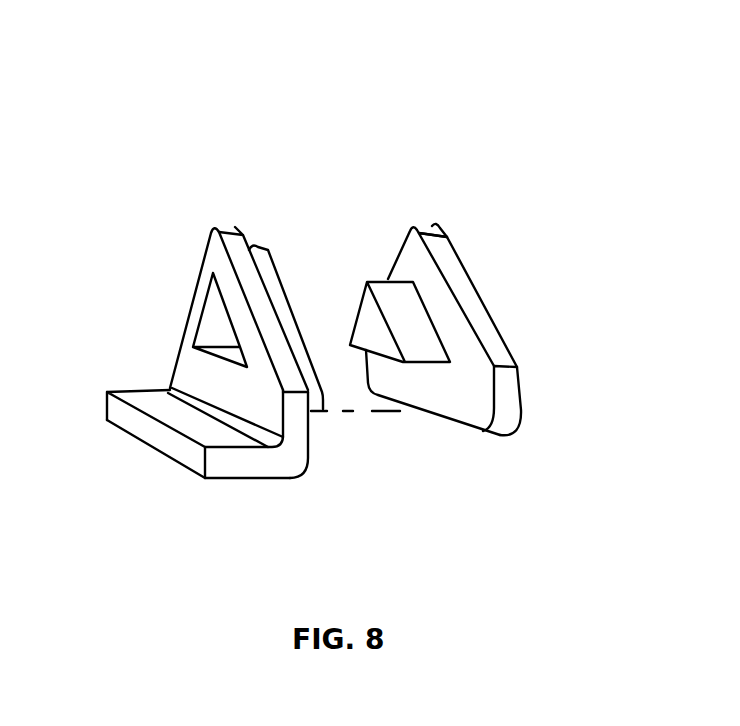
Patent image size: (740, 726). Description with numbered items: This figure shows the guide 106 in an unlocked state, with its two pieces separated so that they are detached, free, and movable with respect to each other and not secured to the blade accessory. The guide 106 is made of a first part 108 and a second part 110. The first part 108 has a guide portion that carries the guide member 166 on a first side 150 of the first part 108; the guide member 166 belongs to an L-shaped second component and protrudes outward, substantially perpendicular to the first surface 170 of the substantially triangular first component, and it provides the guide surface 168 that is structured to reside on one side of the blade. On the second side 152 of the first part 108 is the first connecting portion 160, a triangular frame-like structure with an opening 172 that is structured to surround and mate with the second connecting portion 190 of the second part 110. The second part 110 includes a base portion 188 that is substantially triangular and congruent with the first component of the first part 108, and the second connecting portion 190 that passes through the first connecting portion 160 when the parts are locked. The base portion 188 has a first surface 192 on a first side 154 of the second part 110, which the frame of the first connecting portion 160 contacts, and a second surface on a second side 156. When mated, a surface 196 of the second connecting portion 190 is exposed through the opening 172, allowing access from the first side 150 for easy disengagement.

The guide 106 is at (625, 112).
The first part 108 is at (265, 140).
The second part 110 is at (480, 140).
The first side 150 is at (177, 247).
The second side 152 is at (280, 232).
The first side 154 is at (356, 222).
The second side 156 is at (506, 270).
The first connecting portion 160 is at (313, 374).
The guide member 166 is at (103, 383).
The guide surface 168 is at (240, 496).
The first surface 170 is at (194, 371).
The opening 172 is at (222, 340).
The base portion 188 is at (442, 213).
The second connecting portion 190 is at (421, 357).
The first surface 192 is at (467, 397).
The surface 196 is at (375, 336).